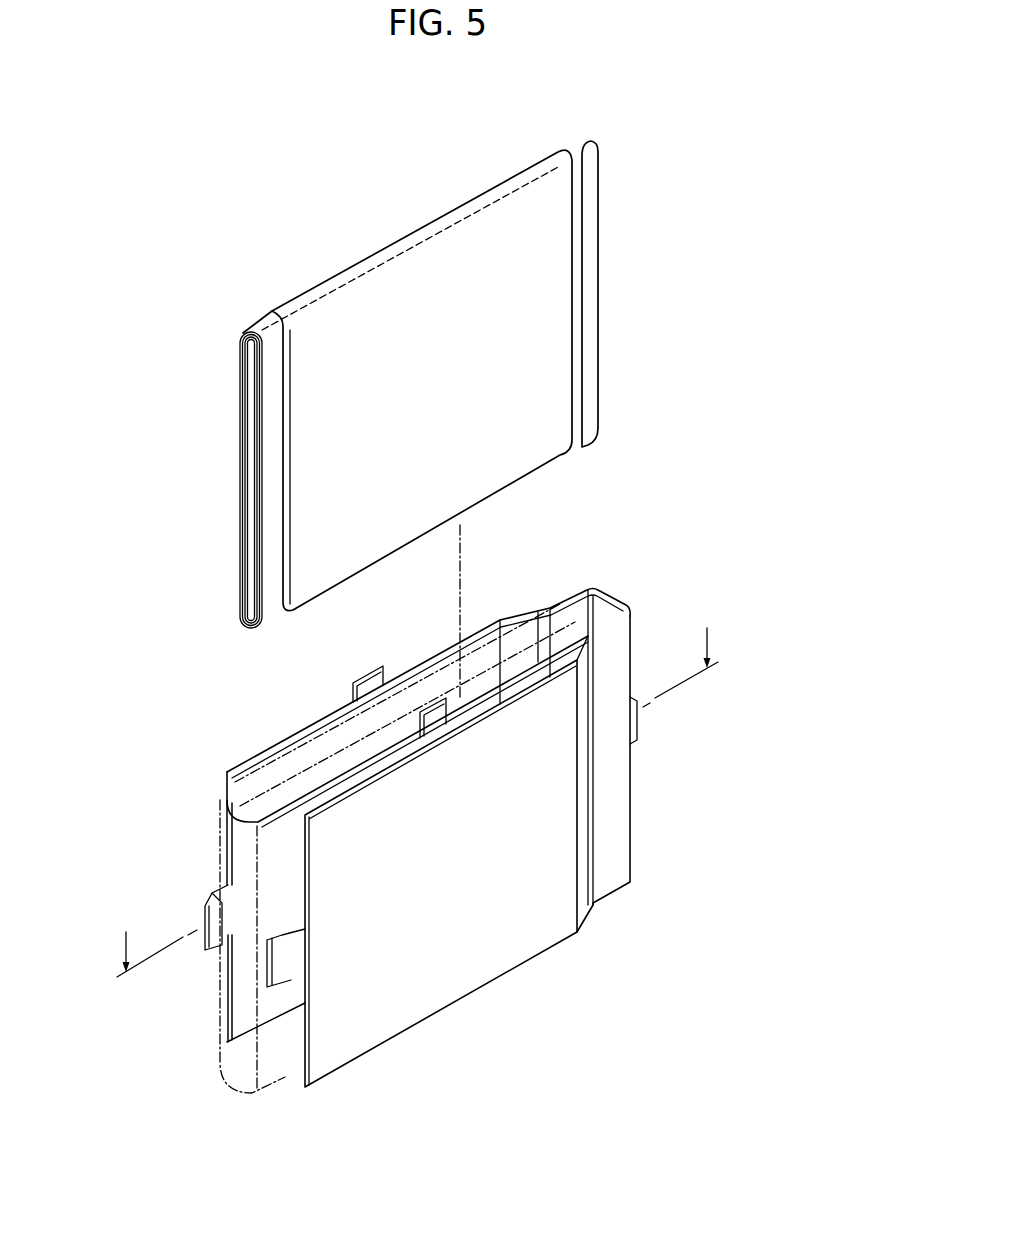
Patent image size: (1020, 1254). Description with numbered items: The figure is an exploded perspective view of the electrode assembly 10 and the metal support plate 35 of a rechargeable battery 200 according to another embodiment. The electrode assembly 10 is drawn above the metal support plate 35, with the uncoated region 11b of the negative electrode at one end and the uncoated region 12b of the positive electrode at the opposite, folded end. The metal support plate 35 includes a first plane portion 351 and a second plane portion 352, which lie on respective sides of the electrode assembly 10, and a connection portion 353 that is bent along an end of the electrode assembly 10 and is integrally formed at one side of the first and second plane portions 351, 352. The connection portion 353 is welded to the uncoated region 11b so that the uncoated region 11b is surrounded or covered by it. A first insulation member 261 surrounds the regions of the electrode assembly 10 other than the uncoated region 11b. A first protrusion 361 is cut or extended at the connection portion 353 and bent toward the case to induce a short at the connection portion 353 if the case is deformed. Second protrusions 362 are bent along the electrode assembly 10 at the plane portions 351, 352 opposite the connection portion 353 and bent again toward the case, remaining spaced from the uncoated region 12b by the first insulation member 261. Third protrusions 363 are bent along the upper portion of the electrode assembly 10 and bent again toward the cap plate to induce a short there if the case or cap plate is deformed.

The rechargeable battery 200 is at (398, 117).
The electrode assembly 10 is at (366, 246).
The uncoated region of the positive electrode 12b is at (258, 330).
The uncoated region of the negative electrode 11b is at (598, 288).
The metal support plate 35 is at (549, 974).
The first plane portion 351 is at (462, 977).
The second plane portion 352 is at (483, 637).
The connection portion 353 is at (610, 807).
The first protrusion 361 is at (633, 733).
The second protrusion 362 is at (213, 950).
The third protrusion 363 is at (438, 698).
The first insulation member 261 is at (276, 762).